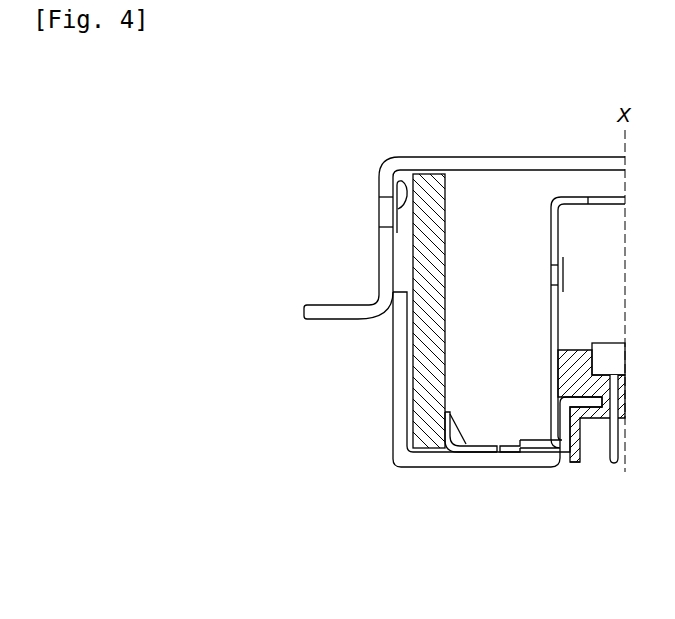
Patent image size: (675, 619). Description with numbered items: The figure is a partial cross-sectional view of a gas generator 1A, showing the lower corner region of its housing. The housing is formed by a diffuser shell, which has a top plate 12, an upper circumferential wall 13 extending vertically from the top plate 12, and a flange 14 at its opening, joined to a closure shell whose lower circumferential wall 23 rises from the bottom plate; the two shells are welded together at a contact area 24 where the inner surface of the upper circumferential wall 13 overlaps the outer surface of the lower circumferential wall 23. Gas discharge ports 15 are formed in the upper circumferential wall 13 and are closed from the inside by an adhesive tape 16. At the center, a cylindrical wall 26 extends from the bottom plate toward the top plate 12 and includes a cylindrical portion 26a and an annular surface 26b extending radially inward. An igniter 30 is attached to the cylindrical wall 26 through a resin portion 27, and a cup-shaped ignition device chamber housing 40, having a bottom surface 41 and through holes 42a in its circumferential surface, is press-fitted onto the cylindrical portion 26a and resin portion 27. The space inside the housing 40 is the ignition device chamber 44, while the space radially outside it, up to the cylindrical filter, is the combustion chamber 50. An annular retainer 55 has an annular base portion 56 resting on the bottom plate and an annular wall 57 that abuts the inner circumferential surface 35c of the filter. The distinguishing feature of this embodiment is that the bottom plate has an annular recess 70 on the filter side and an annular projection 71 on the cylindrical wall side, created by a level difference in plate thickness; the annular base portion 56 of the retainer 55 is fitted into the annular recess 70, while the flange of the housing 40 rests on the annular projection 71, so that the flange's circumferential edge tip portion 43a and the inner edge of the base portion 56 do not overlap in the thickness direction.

The top plate 12 is at (506, 156).
The gas generator 1A is at (556, 156).
The bottom surface 41 is at (588, 197).
The upper circumferential wall 13 is at (378, 260).
The gas discharge ports 15 is at (380, 216).
The adhesive tape 16 is at (394, 183).
The flange 14 is at (326, 304).
The contact area 24 is at (392, 300).
The lower circumferential wall 23 is at (392, 394).
The inner circumferential surface 35c is at (446, 349).
The annular recess 70 is at (444, 427).
The ignition device chamber housing 40 is at (550, 223).
The circumferential edge tip portion 43a is at (512, 443).
The through holes 42a is at (550, 275).
The combustion chamber 50 is at (478, 249).
The ignition device chamber 44 is at (581, 246).
The igniter 30 is at (600, 343).
The resin portion 27 is at (563, 382).
The cylindrical portion 26a is at (574, 430).
The annular surface 26b is at (616, 466).
The cylindrical wall 26 is at (577, 516).
The annular wall 57 is at (447, 455).
The annular base portion 56 is at (494, 455).
The annular retainer 55 is at (500, 552).
The annular projection 71 is at (500, 468).